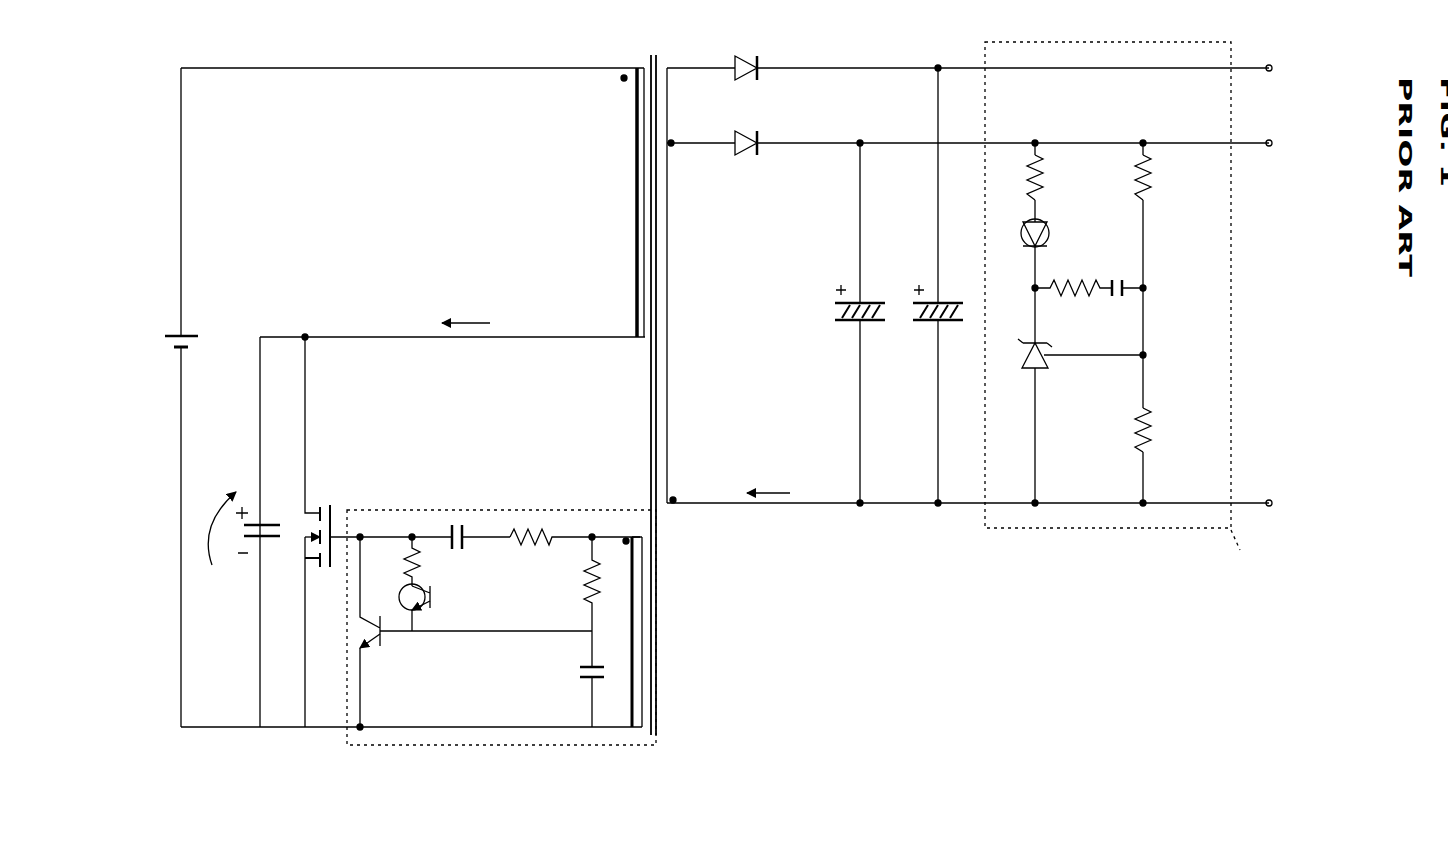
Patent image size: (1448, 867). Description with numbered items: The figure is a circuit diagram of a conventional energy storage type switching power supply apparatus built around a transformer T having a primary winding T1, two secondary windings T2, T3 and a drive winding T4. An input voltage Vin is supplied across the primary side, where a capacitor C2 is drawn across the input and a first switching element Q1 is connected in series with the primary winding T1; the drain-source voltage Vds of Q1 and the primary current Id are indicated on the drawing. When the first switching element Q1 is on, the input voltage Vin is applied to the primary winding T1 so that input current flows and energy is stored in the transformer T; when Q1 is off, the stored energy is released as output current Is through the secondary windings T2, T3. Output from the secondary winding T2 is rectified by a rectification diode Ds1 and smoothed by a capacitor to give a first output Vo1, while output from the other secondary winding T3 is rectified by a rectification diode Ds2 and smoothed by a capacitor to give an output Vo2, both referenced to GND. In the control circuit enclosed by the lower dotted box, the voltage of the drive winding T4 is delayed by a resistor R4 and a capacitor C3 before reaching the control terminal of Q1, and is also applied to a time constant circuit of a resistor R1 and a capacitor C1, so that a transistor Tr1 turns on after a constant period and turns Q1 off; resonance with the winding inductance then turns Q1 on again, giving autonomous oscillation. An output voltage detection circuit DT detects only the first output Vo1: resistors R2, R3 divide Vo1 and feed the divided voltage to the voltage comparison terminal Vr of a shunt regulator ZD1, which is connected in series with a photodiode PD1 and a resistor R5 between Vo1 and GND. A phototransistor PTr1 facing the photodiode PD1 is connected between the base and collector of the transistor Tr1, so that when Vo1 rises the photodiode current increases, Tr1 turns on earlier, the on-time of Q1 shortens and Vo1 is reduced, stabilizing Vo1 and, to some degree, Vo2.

The input voltage Vin is at (170, 329).
The drain-source voltage Vds is at (228, 514).
The capacitor C2 is at (268, 518).
The first switching element Q1 is at (378, 523).
The transistor Tr1 is at (474, 632).
The phototransistor PTr1 is at (437, 582).
The capacitor C3 is at (477, 523).
The resistor R4 is at (575, 521).
The resistor R1 is at (574, 582).
The capacitor C1 is at (578, 679).
The transformer T is at (650, 387).
The primary winding T1 is at (623, 202).
The secondary winding T2 is at (701, 285).
The secondary winding T3 is at (685, 56).
The drive winding T4 is at (629, 620).
The drain current Id is at (475, 324).
The secondary current Is is at (779, 493).
The rectification diode Ds2 is at (1002, 54).
The rectification diode Ds1 is at (1002, 128).
The output Vo2 is at (1290, 69).
The first output Vo1 is at (1290, 144).
The ground GND is at (1294, 503).
The output voltage detection circuit DT is at (1115, 313).
The resistor R5 is at (1053, 177).
The resistor R2 is at (1161, 177).
The photodiode PD1 is at (1056, 232).
The shunt regulator ZD1 is at (1059, 346).
The voltage comparison terminal Vr is at (1110, 355).
The resistor R3 is at (1161, 430).